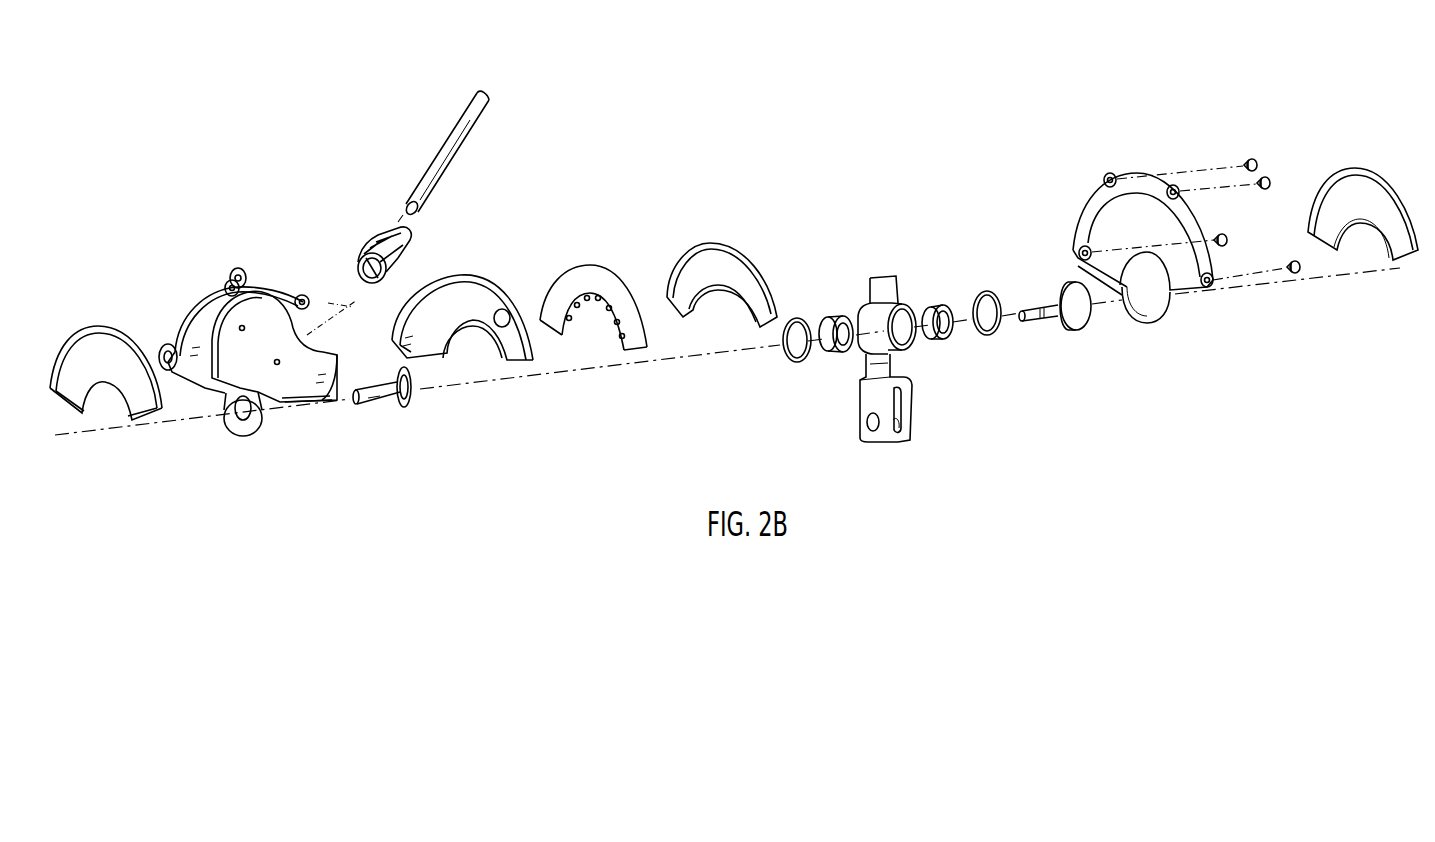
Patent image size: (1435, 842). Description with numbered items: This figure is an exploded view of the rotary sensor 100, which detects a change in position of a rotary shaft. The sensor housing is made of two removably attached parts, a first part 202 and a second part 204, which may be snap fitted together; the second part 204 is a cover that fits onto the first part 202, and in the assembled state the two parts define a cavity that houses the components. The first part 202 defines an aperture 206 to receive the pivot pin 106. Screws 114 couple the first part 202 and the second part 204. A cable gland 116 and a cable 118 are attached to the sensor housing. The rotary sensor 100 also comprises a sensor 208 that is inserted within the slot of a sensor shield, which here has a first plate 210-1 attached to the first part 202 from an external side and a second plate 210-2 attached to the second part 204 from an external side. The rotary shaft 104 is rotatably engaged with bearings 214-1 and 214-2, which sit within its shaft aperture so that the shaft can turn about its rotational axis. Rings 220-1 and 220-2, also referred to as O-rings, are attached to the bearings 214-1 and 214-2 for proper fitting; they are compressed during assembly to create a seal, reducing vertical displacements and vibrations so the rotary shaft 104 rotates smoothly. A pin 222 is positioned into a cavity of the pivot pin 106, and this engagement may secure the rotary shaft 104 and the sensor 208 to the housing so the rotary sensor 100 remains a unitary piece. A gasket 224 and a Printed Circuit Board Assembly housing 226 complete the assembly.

The rotary sensor 100 is at (148, 162).
The rotary shaft 104 is at (858, 407).
The pivot pin 106 is at (372, 398).
The screws 114 is at (1287, 106).
The cable gland 116 is at (377, 237).
The cable 118 is at (440, 158).
The first part 202 is at (207, 307).
The second part 204 is at (1137, 180).
The aperture 206 is at (272, 435).
The sensor 208 is at (592, 267).
The first plate 210-1 is at (100, 330).
The second plate 210-2 is at (1367, 168).
The first bearing 214-1 is at (838, 314).
The second bearing 214-2 is at (936, 304).
The first ring 220-1 is at (795, 318).
The second ring 220-2 is at (987, 291).
The pin 222 is at (1050, 298).
The gasket 224 is at (715, 241).
The Printed Circuit Board Assembly housing 226 is at (497, 365).